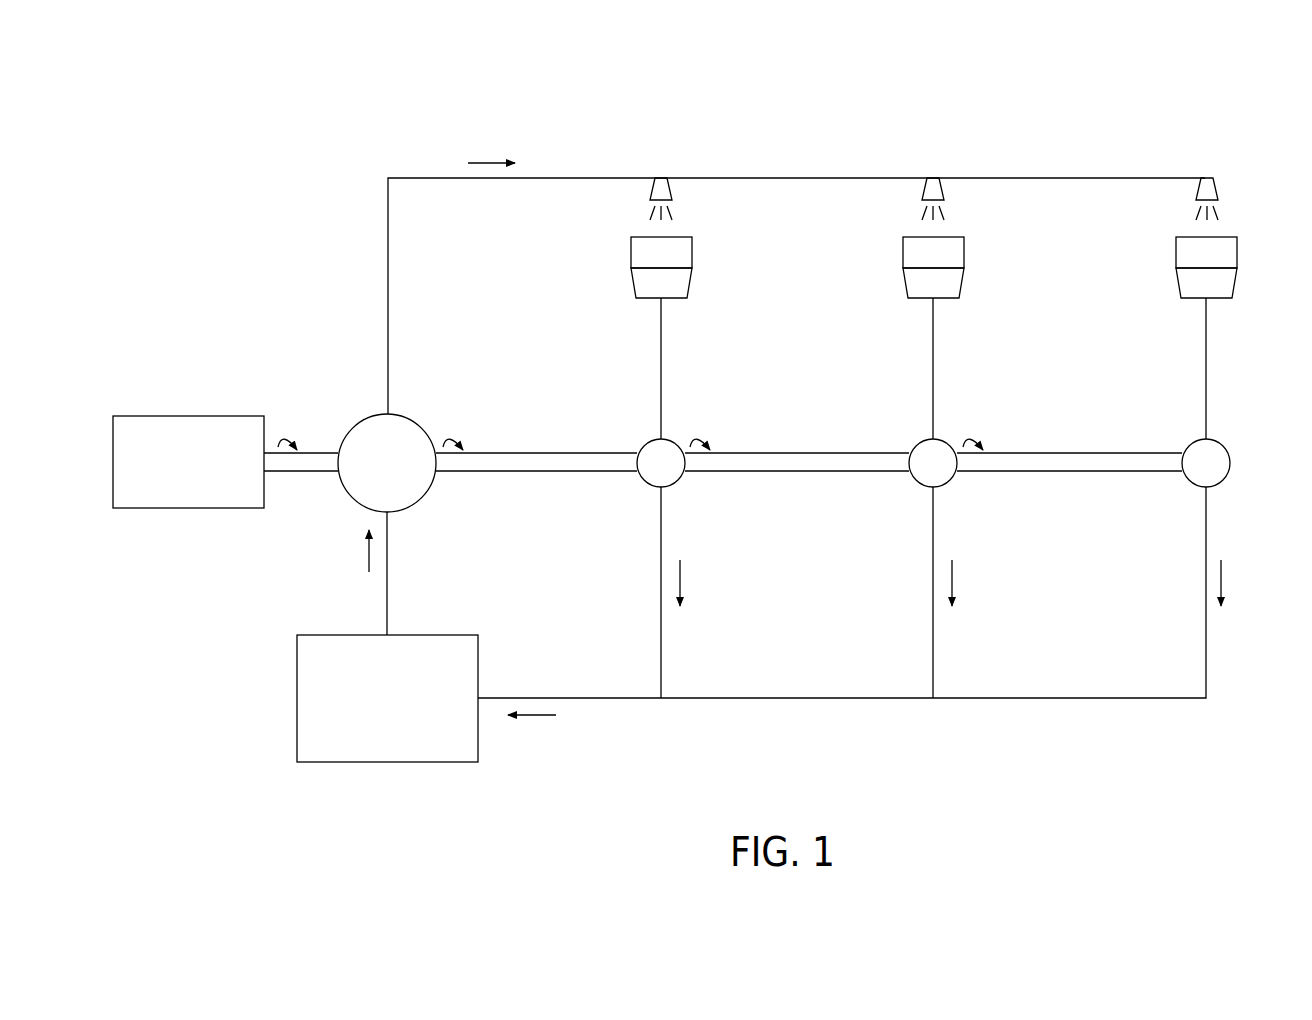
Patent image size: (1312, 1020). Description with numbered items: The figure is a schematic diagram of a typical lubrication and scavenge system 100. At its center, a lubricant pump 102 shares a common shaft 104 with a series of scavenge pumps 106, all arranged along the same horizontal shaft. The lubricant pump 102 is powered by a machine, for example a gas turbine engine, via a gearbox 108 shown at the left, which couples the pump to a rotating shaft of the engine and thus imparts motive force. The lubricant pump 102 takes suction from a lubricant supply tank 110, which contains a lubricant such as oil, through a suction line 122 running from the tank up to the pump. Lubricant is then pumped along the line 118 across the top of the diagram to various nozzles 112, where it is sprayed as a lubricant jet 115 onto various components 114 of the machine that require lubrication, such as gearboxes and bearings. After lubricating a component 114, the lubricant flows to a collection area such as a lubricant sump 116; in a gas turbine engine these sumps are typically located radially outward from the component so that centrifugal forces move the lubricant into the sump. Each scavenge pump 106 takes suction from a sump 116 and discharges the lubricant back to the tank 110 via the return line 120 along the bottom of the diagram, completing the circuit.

The lubrication and scavenge system 100 is at (250, 108).
The lubricant pump 102 is at (406, 474).
The common shaft 104 is at (525, 463).
The scavenge pump 106 is at (676, 472).
The gearbox 108 is at (203, 473).
The lubricant supply tank 110 is at (400, 708).
The nozzle 112 is at (672, 190).
The component 114 is at (676, 264).
The lubricant jet 115 is at (680, 211).
The lubricant sump 116 is at (676, 294).
The supply line 118 is at (420, 178).
The supply line 120 is at (628, 699).
The suction line 122 is at (387, 609).